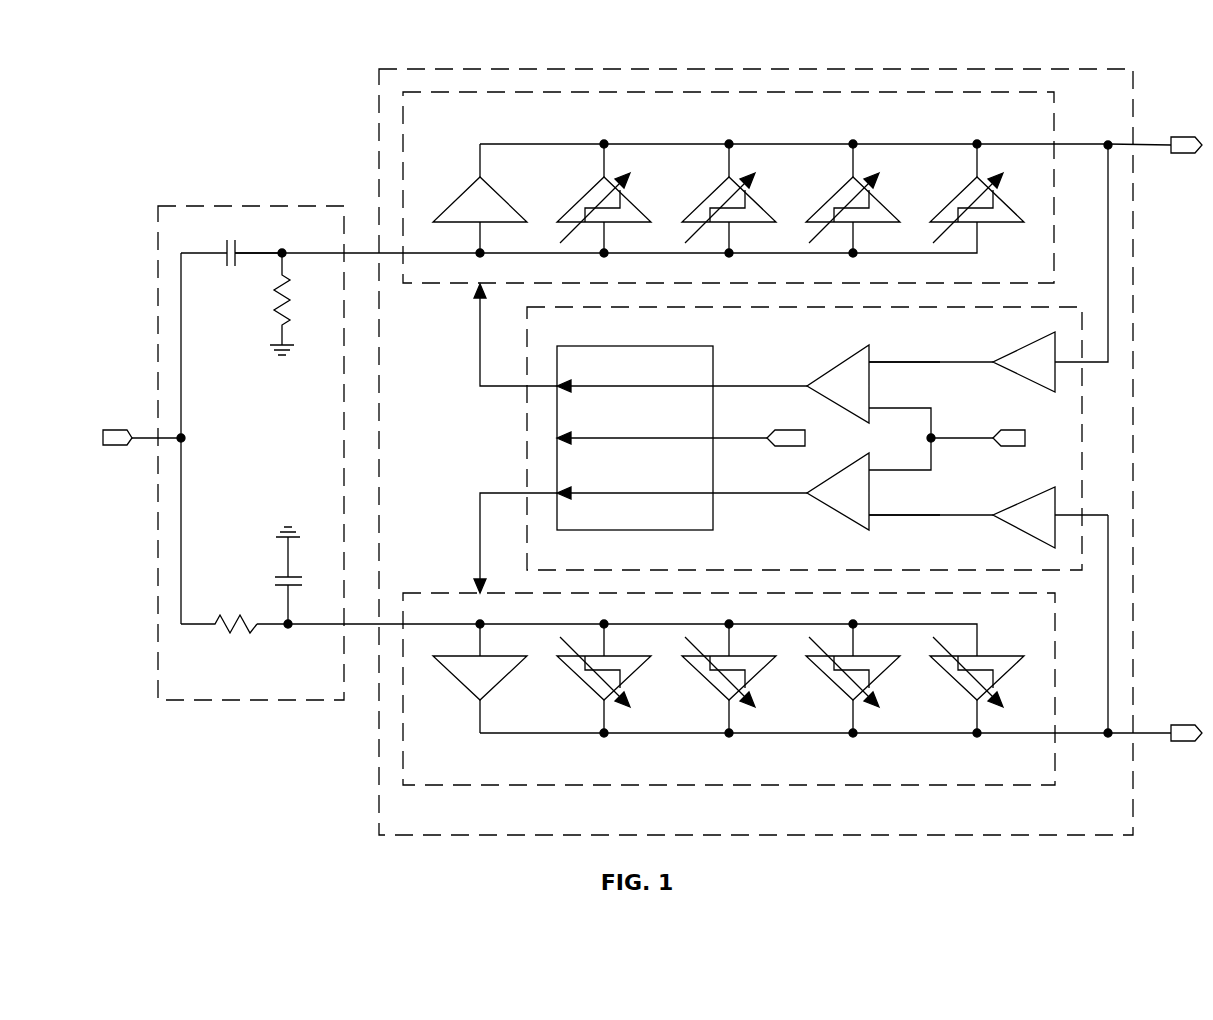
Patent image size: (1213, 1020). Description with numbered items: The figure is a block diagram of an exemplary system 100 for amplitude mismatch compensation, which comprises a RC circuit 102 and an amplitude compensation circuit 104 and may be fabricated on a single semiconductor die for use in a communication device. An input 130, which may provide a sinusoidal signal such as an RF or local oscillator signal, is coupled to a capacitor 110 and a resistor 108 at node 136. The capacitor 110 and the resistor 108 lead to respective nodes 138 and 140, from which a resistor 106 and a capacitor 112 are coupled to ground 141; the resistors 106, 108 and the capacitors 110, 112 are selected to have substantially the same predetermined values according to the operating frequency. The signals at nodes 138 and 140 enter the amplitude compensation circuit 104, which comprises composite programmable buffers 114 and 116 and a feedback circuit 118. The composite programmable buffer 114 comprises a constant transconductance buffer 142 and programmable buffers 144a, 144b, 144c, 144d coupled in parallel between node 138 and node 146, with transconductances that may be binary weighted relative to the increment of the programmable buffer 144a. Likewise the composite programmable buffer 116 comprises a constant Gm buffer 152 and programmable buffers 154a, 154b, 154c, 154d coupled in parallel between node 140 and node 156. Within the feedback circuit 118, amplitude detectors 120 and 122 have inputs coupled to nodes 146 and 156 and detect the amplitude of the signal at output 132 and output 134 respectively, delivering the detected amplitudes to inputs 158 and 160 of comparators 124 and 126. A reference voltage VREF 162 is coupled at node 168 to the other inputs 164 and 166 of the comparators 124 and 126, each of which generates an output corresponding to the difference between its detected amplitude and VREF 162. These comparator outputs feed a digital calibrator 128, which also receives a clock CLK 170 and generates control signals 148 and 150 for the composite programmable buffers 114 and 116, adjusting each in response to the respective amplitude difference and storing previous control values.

The system 100 is at (1147, 77).
The RC circuit 102 is at (270, 206).
The amplitude compensation circuit 104 is at (945, 69).
The resistor 106 is at (291, 312).
The resistor 108 is at (240, 620).
The capacitor 110 is at (228, 268).
The capacitor 112 is at (300, 576).
The composite programmable buffer 114 is at (1054, 183).
The composite programmable buffer 116 is at (1055, 635).
The feedback circuit 118 is at (1082, 410).
The amplitude detector 120 is at (1003, 342).
The amplitude detector 122 is at (1035, 485).
The comparator 124 is at (826, 366).
The comparator 126 is at (826, 476).
The digital calibrator 128 is at (700, 346).
The input 130 is at (113, 447).
The output 132 is at (1180, 155).
The output 134 is at (1180, 745).
The node 136 is at (186, 438).
The node 138 is at (284, 250).
The node 140 is at (287, 629).
The ground 141 is at (268, 348).
The constant transconductance (Gm) buffer 142 is at (455, 192).
The programmable buffer 144a is at (574, 200).
The programmable buffer 144b is at (699, 200).
The programmable buffer 144c is at (823, 200).
The programmable buffer 144d is at (947, 200).
The node 146 is at (1105, 141).
The control signal 148 is at (478, 330).
The control signal 150 is at (478, 540).
The constant Gm buffer 152 is at (455, 688).
The programmable buffer 154a is at (574, 680).
The programmable buffer 154b is at (699, 680).
The programmable buffer 154c is at (823, 680).
The programmable buffer 154d is at (947, 680).
The node 156 is at (1106, 738).
The input 158 is at (880, 358).
The input 160 is at (884, 512).
The reference voltage (VREF) 162 is at (1003, 449).
The input 164 is at (886, 405).
The input 166 is at (882, 466).
The node 168 is at (936, 443).
The clock (CLK) 170 is at (786, 449).